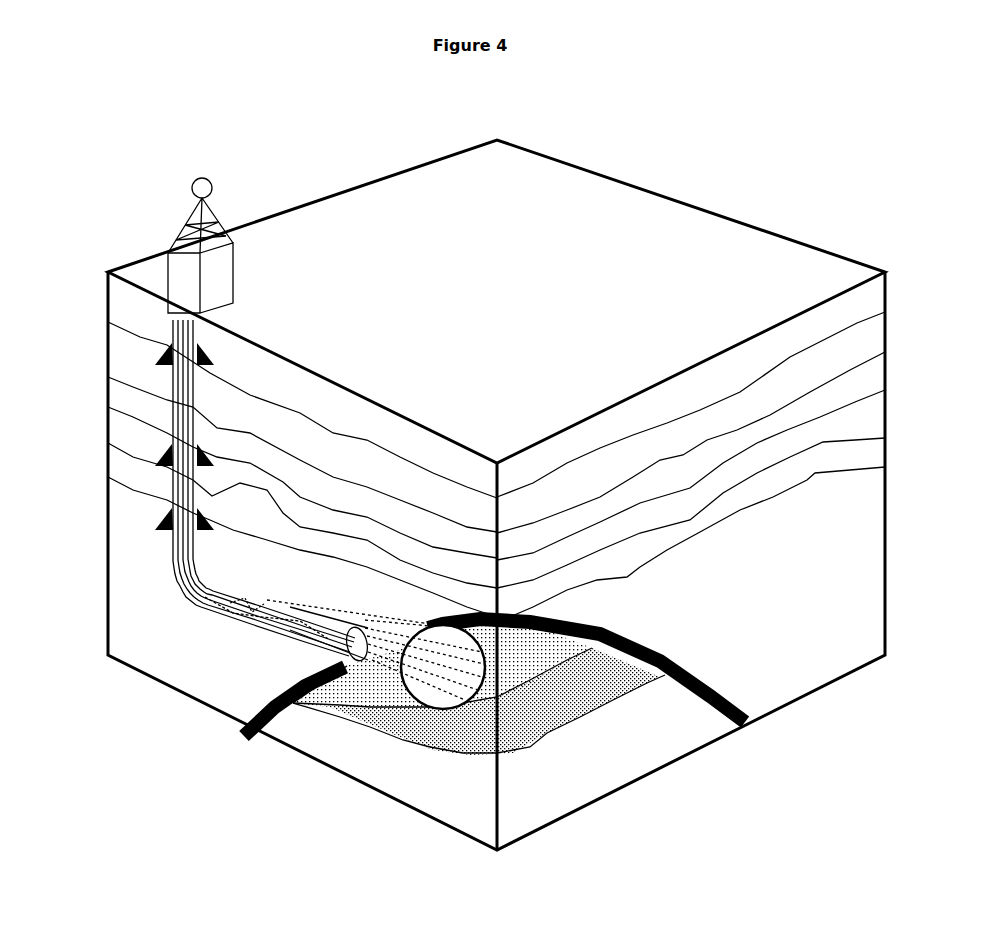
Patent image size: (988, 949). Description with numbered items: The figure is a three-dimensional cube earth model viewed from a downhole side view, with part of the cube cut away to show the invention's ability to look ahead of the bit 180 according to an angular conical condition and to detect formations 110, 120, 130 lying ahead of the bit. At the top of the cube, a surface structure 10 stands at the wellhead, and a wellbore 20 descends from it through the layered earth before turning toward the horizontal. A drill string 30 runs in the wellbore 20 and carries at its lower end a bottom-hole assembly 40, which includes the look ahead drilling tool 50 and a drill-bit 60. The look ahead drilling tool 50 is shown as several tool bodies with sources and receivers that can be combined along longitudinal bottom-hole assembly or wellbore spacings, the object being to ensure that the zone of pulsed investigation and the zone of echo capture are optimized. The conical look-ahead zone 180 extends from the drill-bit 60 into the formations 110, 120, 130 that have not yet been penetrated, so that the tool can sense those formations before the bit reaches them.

The surface structure 10 is at (172, 250).
The wellbore 20 is at (165, 345).
The drill string 30 is at (177, 557).
The bottom-hole assembly 40 is at (183, 563).
The look ahead drilling tool 50 is at (333, 627).
The drill-bit 60 is at (330, 690).
The formation 110 is at (713, 718).
The formation 120 is at (545, 735).
The formation 130 is at (600, 712).
The look ahead of the bit 180 is at (438, 709).